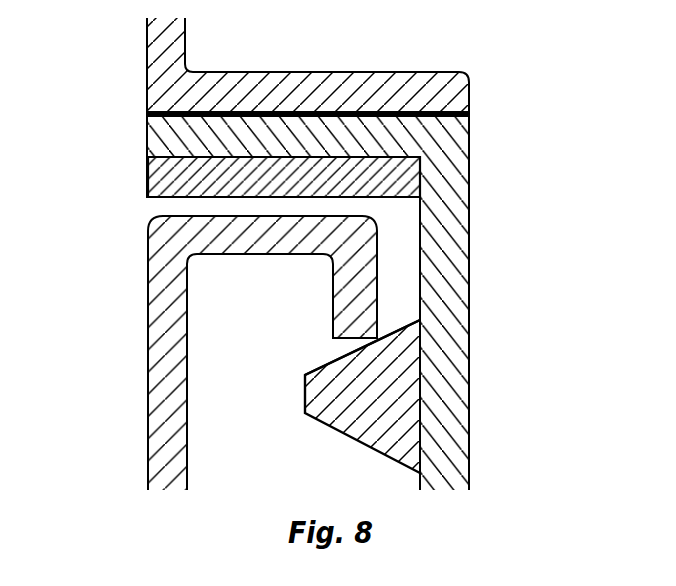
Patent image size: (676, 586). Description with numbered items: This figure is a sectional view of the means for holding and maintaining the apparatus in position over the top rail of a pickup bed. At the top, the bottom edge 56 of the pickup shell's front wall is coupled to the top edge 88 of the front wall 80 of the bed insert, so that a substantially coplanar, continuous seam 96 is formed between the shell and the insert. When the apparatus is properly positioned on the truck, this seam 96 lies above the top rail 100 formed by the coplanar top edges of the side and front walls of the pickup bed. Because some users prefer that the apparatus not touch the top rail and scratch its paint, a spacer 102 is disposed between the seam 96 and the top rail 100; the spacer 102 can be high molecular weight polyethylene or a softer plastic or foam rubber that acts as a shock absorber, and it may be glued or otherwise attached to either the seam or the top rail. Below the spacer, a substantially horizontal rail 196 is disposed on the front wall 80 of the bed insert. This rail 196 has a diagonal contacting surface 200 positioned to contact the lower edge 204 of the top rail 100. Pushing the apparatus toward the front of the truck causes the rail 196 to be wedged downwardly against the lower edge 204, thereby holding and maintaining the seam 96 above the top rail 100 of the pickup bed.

The bottom edge 56 is at (147, 90).
The front wall 80 is at (470, 208).
The top edge 88 is at (147, 140).
The seam 96 is at (470, 113).
The top rail 100 is at (148, 272).
The spacer 102 is at (147, 175).
The horizontal rail 196 is at (305, 413).
The diagonal contacting surface 200 is at (318, 368).
The lower edge 204 is at (377, 338).